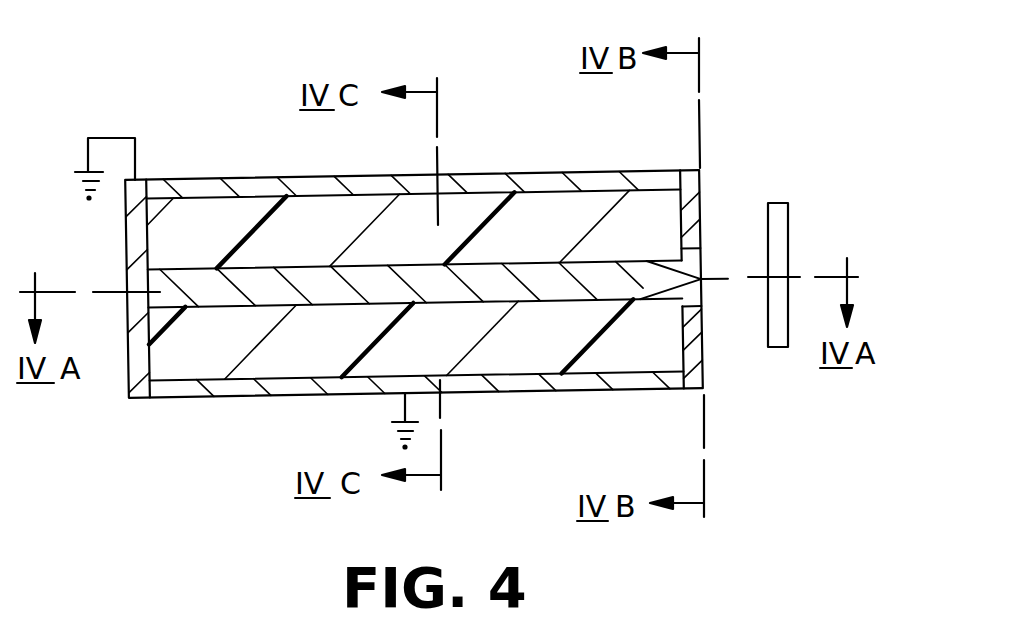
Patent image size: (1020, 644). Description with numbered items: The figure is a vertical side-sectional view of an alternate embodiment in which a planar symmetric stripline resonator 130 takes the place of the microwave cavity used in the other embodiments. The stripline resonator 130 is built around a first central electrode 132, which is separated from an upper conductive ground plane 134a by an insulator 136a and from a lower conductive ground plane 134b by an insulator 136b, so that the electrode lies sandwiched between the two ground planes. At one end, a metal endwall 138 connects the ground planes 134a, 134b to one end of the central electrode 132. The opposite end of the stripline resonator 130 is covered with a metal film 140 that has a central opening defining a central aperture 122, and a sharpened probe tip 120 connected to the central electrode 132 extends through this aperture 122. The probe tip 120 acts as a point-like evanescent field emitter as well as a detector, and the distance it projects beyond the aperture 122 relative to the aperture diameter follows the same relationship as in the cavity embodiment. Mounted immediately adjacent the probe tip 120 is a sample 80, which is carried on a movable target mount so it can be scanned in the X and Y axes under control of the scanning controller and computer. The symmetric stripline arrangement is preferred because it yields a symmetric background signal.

The stripline resonator 130 is at (472, 138).
The upper conductive ground plane 134a is at (543, 175).
The lower conductive ground plane 134b is at (417, 411).
The central electrode 132 is at (223, 300).
The insulator 136a is at (205, 218).
The insulator 136b is at (283, 357).
The metal endwall 138 is at (127, 368).
The metal film 140 is at (703, 169).
The central aperture 122 is at (690, 258).
The probe tip 120 is at (749, 340).
The sample 80 is at (803, 264).